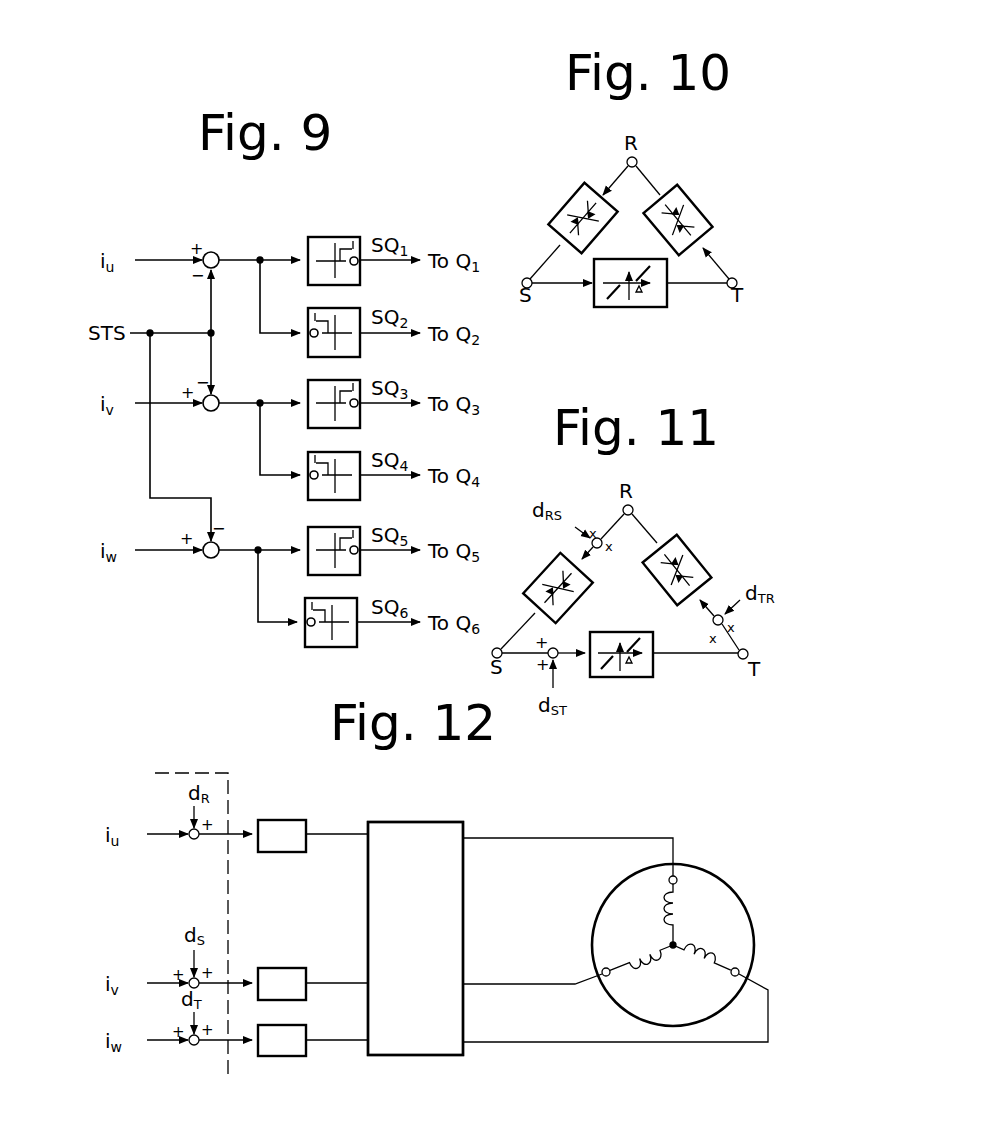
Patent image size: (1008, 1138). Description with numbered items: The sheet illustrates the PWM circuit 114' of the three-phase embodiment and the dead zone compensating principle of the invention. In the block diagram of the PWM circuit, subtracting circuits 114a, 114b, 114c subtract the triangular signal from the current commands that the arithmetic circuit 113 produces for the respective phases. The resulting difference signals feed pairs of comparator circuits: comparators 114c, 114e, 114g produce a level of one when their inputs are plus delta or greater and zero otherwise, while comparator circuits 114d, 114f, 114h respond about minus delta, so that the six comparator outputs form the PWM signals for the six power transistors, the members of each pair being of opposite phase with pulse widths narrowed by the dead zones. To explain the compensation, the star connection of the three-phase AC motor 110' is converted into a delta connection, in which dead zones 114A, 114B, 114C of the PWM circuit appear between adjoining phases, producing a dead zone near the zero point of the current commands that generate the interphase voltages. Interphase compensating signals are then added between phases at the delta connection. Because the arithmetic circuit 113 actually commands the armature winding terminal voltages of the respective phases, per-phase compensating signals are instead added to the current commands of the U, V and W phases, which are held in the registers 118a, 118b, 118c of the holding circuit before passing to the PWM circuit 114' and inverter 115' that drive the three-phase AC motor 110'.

In FIG. 9, the subtracting circuit 114a is at (218, 252).
In FIG. 9, the subtracting circuit 114b is at (211, 412).
In FIG. 9, the subtracting circuit / comparator 114c is at (347, 237).
In FIG. 9, the comparator circuit 114d is at (360, 314).
In FIG. 9, the comparator 114e is at (360, 386).
In FIG. 9, the comparator circuit 114f is at (360, 457).
In FIG. 9, the comparator 114g is at (360, 533).
In FIG. 9, the comparator circuit 114h is at (358, 605).
In FIG. 10, the dead zone 114A is at (575, 191).
In FIG. 10, the dead zone 114B is at (700, 197).
In FIG. 10, the dead zone 114C is at (648, 307).
In FIG. 12, the arithmetic circuit 113 is at (222, 894).
In FIG. 12, the register 118a is at (293, 820).
In FIG. 12, the register 118b is at (292, 968).
In FIG. 12, the register 118c is at (290, 1057).
In FIG. 12, the PWM circuit 114' is at (440, 909).
In FIG. 12, the inverter 115' is at (415, 938).
In FIG. 12, the three-phase AC motor 110' is at (682, 929).